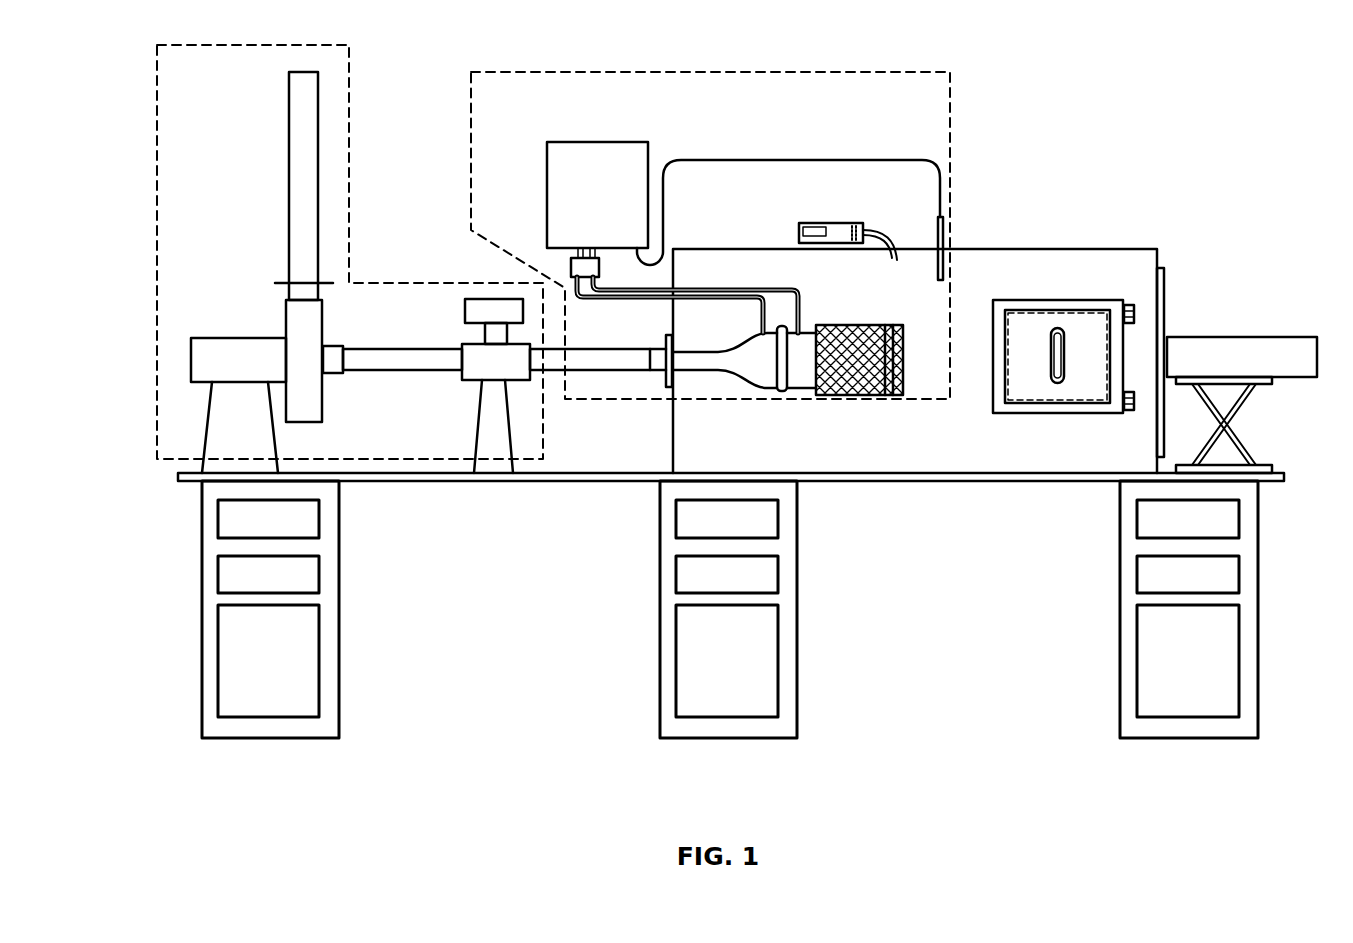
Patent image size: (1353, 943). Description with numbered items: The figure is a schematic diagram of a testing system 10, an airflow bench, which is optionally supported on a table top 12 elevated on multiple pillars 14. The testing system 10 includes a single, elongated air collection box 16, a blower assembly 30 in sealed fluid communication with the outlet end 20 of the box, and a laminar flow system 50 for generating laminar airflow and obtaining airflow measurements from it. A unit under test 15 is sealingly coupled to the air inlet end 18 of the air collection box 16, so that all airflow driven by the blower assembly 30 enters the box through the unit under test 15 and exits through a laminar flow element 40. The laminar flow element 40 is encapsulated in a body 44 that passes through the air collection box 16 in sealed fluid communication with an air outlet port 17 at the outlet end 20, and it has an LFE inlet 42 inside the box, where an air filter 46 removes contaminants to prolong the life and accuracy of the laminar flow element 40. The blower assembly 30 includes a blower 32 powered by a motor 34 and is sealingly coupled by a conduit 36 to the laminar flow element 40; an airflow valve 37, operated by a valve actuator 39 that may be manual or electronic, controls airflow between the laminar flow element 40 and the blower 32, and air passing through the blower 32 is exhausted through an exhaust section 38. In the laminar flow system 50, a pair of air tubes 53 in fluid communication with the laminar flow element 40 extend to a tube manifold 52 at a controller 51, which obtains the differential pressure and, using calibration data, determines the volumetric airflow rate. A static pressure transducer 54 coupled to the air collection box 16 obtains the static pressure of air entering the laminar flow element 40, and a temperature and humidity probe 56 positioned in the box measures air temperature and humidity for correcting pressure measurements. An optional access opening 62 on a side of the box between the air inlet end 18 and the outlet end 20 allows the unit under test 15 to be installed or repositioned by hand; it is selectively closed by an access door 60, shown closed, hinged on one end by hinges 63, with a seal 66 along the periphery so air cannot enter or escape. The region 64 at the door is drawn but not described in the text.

The testing system 10 is at (1052, 86).
The table top 12 is at (1018, 481).
The pillars 14 is at (292, 738).
The unit under test 15 is at (1300, 337).
The air collection box 16 is at (1063, 248).
The air outlet port 17 is at (664, 373).
The air inlet end 18 is at (1182, 325).
The outlet end 20 is at (670, 420).
The blower assembly 30 is at (349, 45).
The blower 32 is at (323, 312).
The motor 34 is at (226, 338).
The conduit 36 is at (600, 349).
The airflow valve 37 is at (470, 382).
The exhaust section 38 is at (289, 107).
The valve actuator 39 is at (474, 299).
The laminar flow element 40 is at (806, 350).
The LFE inlet 42 is at (910, 360).
The body 44 is at (752, 337).
The air filter 46 is at (858, 395).
The laminar flow system 50 is at (737, 72).
The controller 51 is at (562, 142).
The tube manifold 52 is at (571, 265).
The air tubes 53 is at (712, 298).
The static pressure transducer 54 is at (799, 232).
The temperature and humidity probe 56 is at (943, 228).
The access door 60 is at (1033, 330).
The access opening 62 is at (1010, 358).
The hinges 63 is at (1134, 308).
The door frame 64 is at (993, 366).
The seal 66 is at (1003, 392).